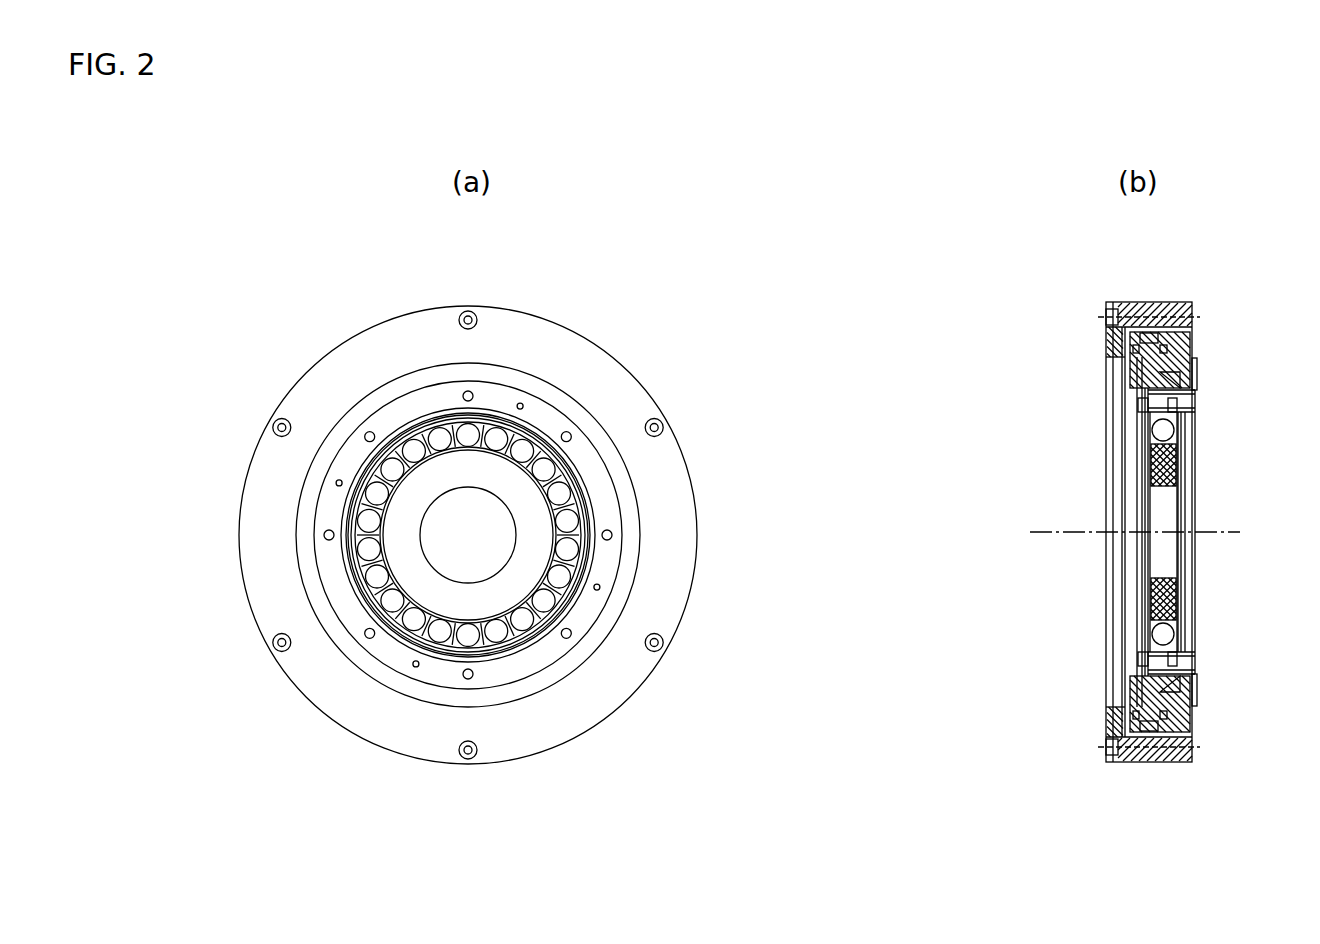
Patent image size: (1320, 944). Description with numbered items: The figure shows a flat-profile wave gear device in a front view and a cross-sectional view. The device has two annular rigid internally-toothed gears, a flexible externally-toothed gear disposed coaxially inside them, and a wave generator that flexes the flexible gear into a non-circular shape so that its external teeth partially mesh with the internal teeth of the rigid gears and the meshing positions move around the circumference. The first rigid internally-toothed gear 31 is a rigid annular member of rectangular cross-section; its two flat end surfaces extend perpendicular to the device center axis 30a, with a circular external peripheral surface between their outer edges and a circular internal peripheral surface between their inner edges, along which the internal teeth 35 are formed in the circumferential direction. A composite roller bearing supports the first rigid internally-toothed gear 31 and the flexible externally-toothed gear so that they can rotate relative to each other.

The device center axis 30a is at (1050, 542).
The first rigid internally-toothed gear 31 is at (1166, 357).
The internal teeth 35 is at (1147, 411).